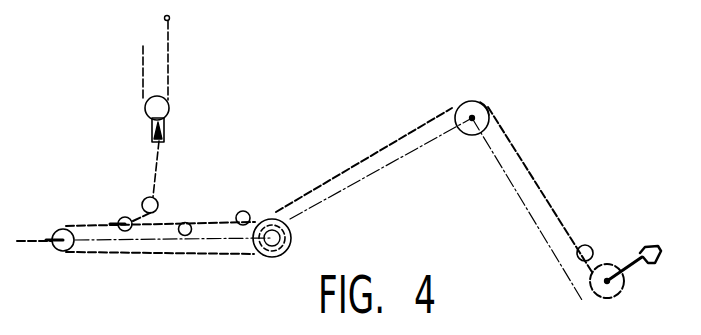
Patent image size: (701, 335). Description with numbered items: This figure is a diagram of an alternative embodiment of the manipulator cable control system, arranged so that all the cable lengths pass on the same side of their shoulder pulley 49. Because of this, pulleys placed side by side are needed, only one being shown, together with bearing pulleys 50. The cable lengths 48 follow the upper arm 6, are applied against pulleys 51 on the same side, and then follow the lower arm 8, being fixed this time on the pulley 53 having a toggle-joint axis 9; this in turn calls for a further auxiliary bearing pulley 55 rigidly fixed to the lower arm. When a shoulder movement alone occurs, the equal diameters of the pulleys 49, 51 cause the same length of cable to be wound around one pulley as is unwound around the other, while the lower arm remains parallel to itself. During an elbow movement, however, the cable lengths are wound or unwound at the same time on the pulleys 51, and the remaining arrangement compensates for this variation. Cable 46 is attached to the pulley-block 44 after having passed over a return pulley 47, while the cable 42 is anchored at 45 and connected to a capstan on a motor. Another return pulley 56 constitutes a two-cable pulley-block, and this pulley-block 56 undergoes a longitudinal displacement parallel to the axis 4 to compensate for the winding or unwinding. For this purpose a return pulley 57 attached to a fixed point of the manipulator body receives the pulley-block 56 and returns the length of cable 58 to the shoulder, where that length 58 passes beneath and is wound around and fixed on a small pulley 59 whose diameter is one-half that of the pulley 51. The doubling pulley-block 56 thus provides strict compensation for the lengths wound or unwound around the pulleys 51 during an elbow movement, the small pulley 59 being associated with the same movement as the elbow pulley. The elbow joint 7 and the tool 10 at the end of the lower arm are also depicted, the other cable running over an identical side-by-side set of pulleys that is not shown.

The axis 4 is at (100, 250).
The upper arm 6 is at (395, 168).
The joint 7 is at (472, 118).
The lower arm 8 is at (500, 170).
The toggle-joint axis 9 is at (582, 283).
The tool 10 is at (633, 257).
The cable 42 is at (141, 56).
The pulley-block 44 is at (150, 110).
The anchoring point 45 is at (171, 18).
The cable 46 is at (160, 147).
The return pulley 47 is at (153, 199).
The cable lengths 48 is at (184, 236).
The shoulder pulley 49 is at (295, 238).
The bearing pulleys 50 is at (247, 212).
The pulleys 51 is at (484, 106).
The pulley 53 is at (618, 282).
The auxiliary bearing pulley 55 is at (585, 245).
The return pulley 56 is at (118, 216).
The return pulley 57 is at (62, 226).
The cable length 58 is at (126, 253).
The small pulley 59 is at (271, 248).